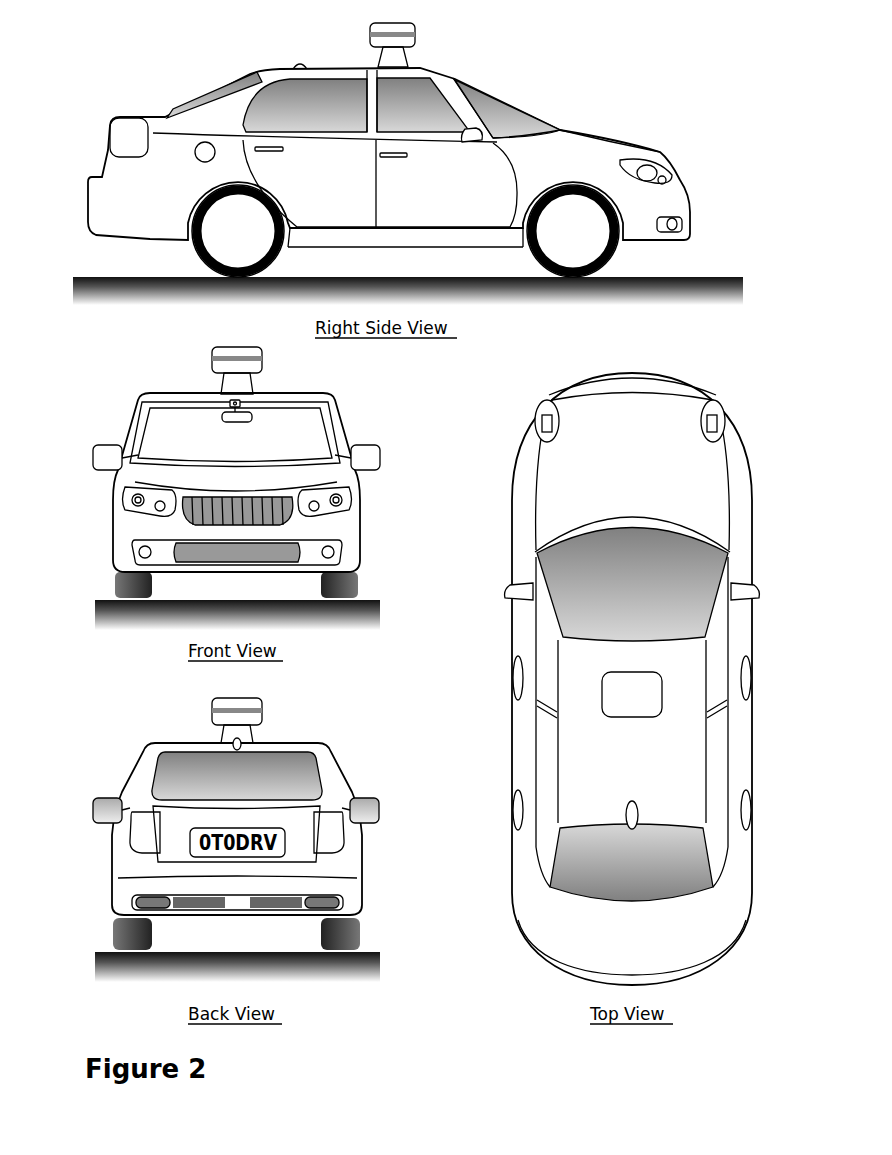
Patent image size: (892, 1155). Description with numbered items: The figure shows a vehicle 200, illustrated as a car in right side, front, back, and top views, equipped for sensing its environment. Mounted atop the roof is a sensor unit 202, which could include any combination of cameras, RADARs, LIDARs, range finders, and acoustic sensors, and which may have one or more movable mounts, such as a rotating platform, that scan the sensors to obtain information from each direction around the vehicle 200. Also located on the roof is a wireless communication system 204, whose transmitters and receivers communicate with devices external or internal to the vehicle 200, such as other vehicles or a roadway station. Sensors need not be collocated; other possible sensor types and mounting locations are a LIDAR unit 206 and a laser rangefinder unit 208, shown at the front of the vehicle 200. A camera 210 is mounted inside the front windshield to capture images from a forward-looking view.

The vehicle 200 is at (86, 106).
The sensor unit 202 is at (416, 43).
The wireless communication system 204 is at (296, 62).
The LIDAR unit 206 is at (686, 222).
The laser rangefinder unit 208 is at (675, 173).
The camera 210 is at (254, 407).